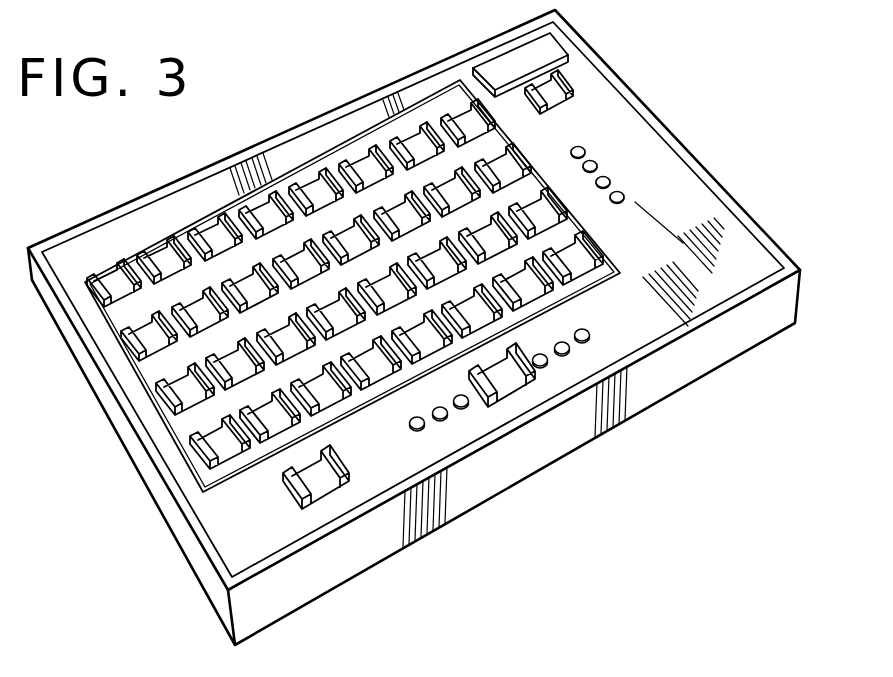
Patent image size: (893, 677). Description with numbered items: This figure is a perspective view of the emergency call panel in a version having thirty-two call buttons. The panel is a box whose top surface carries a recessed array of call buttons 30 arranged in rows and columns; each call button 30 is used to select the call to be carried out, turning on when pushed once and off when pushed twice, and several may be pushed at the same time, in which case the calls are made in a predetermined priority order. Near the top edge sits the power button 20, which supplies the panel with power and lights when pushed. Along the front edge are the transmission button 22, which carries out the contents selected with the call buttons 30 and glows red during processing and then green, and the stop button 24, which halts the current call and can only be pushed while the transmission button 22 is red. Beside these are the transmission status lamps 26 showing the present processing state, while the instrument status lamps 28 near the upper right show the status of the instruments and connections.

The power button 20 is at (551, 91).
The transmission button 22 is at (505, 378).
The stop button 24 is at (320, 480).
The transmission status lamps 26 is at (590, 336).
The instrument status lamps 28 is at (582, 147).
The call buttons 30 is at (118, 290).